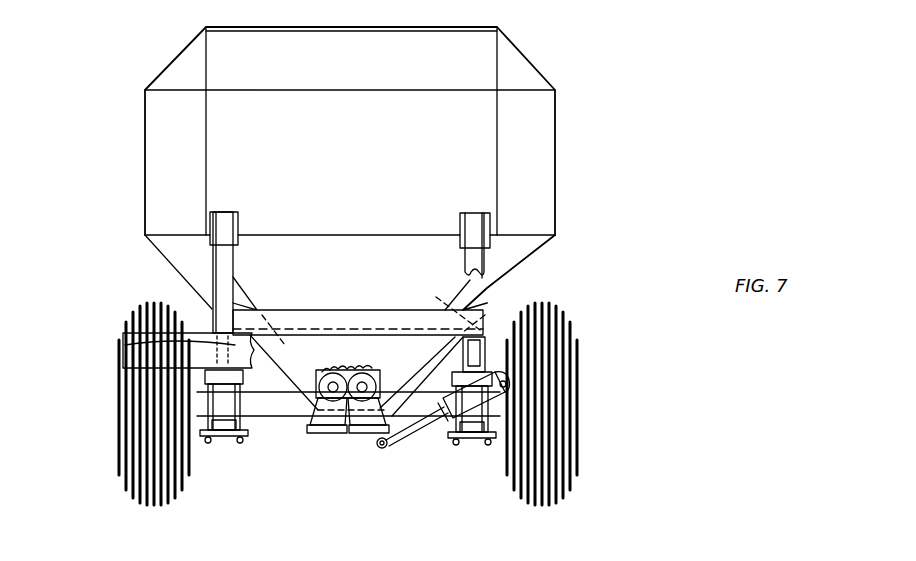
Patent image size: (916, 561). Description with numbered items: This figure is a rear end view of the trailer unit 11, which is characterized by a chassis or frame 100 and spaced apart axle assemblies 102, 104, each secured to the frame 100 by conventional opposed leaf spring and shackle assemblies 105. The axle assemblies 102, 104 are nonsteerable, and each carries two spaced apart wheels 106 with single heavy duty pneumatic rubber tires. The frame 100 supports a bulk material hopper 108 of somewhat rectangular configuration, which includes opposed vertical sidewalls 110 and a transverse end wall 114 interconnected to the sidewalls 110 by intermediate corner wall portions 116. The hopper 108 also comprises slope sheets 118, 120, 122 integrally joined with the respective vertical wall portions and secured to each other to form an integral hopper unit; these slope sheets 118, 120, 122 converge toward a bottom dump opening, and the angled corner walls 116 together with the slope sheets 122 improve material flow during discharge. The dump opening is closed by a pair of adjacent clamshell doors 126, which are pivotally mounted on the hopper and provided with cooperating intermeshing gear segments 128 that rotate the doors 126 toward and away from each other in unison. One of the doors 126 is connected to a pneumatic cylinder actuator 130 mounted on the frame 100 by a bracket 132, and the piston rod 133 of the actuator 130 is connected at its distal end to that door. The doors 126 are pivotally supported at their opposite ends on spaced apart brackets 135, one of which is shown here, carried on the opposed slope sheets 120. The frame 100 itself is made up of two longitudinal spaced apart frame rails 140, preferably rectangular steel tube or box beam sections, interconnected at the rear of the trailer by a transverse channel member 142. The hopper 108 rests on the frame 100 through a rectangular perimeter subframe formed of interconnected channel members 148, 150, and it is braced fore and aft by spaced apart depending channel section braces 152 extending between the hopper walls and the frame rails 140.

The trailer unit 11 is at (358, 131).
The bulk material hopper 108 is at (340, 131).
The vertical sidewall 110 is at (344, 131).
The transverse end wall 114 is at (358, 121).
The corner wall portion 116 is at (354, 265).
The slope sheet 118 is at (346, 272).
The slope sheet 120 is at (360, 267).
The slope sheet 122 is at (350, 272).
The depending channel section brace 152 is at (228, 231).
The channel member 150 is at (359, 309).
The channel member 148 is at (430, 330).
The longitudinal frame rail 140 is at (286, 345).
The wheel 106 is at (352, 414).
The rear axle assembly 104 is at (133, 422).
The transverse channel member 142 is at (165, 380).
The axle assembly 102 is at (563, 301).
The frame 100 is at (548, 357).
The bracket 132 is at (505, 351).
The leaf spring and shackle assembly 105 is at (220, 438).
The bracket 135 is at (325, 408).
The intermeshing gear segment 128 is at (348, 368).
The clamshell door 126 is at (348, 408).
The piston rod 133 is at (396, 444).
The pneumatic cylinder actuator 130 is at (443, 427).